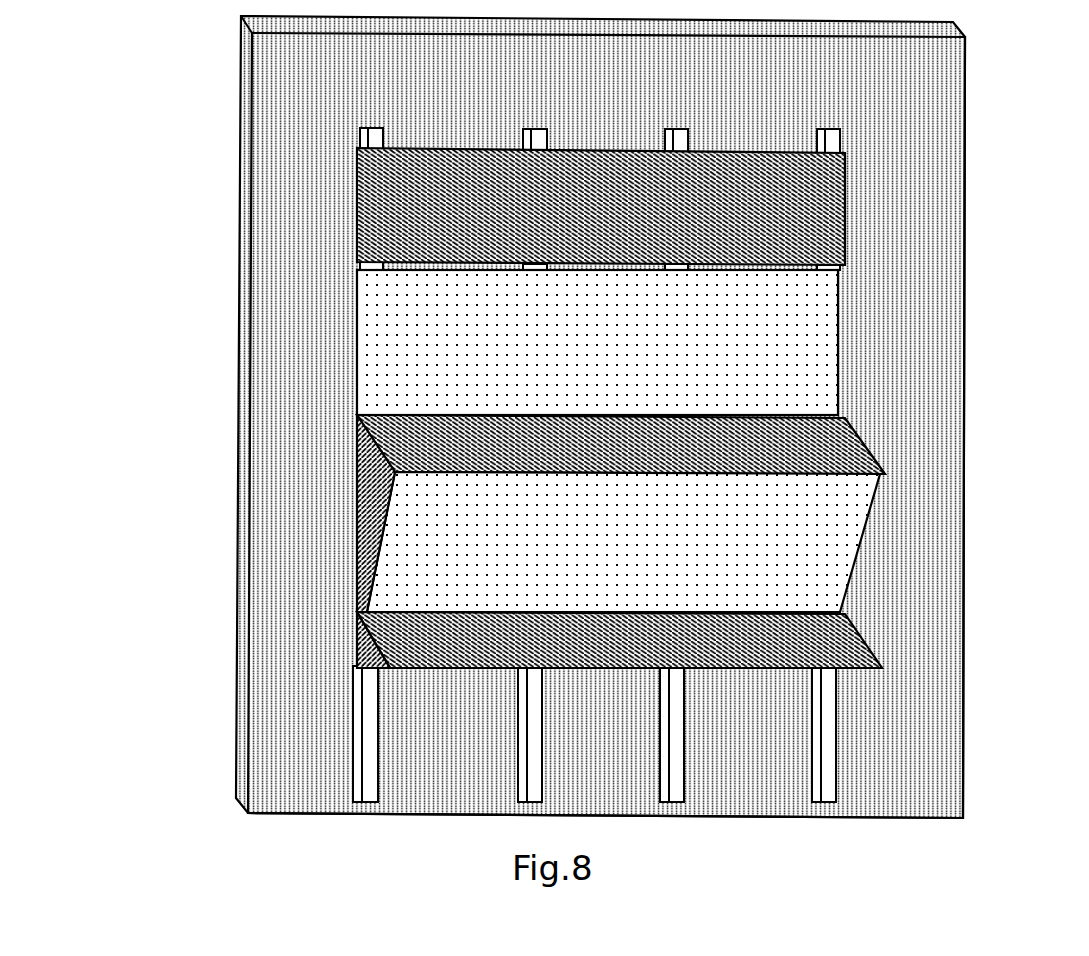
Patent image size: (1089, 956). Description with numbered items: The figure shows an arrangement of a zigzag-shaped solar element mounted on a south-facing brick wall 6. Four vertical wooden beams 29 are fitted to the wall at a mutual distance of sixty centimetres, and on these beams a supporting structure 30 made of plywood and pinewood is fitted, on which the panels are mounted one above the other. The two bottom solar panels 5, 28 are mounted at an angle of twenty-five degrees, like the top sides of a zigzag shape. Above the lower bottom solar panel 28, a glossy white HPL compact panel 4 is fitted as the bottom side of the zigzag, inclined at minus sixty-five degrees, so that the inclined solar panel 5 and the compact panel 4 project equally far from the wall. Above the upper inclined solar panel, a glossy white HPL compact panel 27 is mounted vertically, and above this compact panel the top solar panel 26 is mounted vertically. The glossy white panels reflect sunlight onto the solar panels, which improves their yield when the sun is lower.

The brick wall 6 is at (268, 408).
The top solar panel 26 is at (835, 200).
The glossy white HPL compact panel 27 is at (820, 352).
The bottom solar panel 5 is at (857, 443).
The glossy white HPL compact panel 4 is at (835, 552).
The bottom solar panel 28 is at (855, 650).
The wooden beams 29 is at (826, 782).
The supporting structure 30 is at (357, 495).